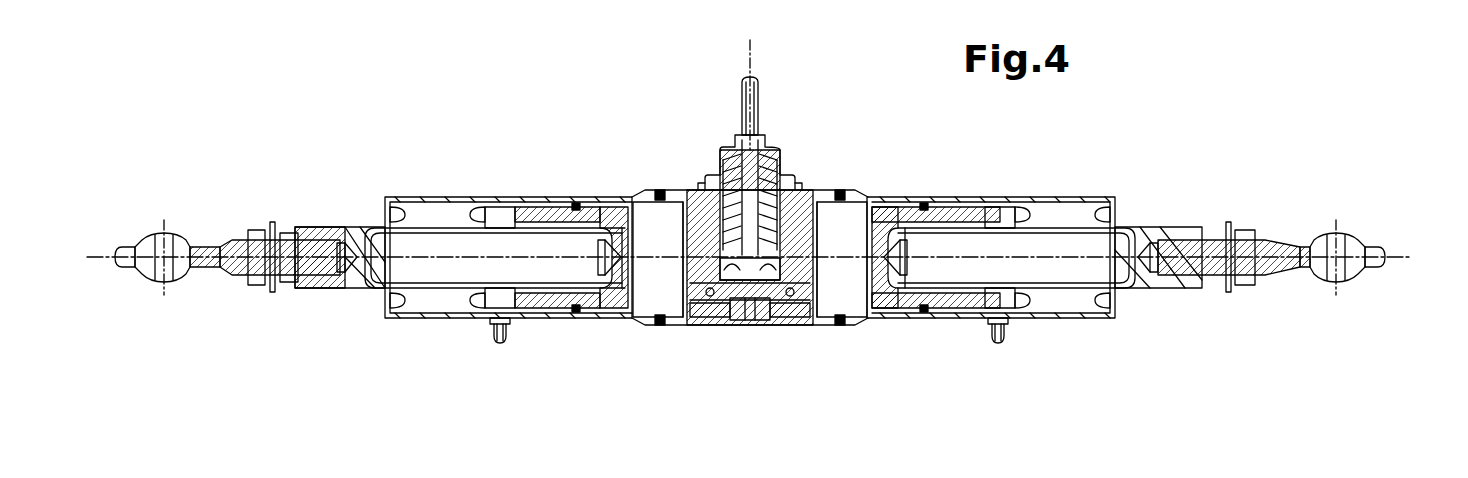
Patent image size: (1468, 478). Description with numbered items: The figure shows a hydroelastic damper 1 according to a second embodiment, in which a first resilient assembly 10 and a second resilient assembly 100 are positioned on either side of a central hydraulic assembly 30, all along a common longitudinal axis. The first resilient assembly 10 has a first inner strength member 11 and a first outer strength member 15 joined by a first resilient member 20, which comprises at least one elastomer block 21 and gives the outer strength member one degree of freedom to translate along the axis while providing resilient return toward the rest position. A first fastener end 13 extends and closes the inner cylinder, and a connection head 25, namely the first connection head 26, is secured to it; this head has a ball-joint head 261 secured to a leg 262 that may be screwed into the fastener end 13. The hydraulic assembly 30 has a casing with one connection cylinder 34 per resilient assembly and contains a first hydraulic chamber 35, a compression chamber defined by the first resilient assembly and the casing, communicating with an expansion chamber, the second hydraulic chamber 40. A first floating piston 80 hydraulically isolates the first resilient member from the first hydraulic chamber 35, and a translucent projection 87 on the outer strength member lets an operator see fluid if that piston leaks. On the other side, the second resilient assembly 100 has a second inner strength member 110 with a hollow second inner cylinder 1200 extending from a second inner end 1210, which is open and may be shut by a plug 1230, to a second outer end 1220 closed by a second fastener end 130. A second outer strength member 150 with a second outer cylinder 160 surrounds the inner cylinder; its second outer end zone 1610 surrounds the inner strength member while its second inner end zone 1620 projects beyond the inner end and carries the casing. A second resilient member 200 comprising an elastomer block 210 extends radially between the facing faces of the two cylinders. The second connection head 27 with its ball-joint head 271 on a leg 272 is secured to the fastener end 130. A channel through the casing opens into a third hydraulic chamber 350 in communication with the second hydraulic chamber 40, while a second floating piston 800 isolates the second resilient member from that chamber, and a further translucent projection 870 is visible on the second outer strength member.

The hydroelastic damper 1 is at (450, 82).
The first resilient assembly 10 is at (466, 330).
The first inner strength member 11 is at (350, 300).
The first fastener end 13 is at (322, 222).
The first outer strength member 15 is at (497, 192).
The first resilient member 20 is at (483, 208).
The first block 21 is at (417, 214).
The connection head 25 is at (137, 339).
The first connection head 26 is at (134, 290).
The second connection head 27 is at (1302, 292).
The hydraulic assembly 30 is at (796, 154).
The connection cylinder 34 is at (700, 180).
The first hydraulic chamber 35 is at (645, 236).
The second hydraulic chamber 40 is at (768, 312).
The first floating piston 80 is at (590, 212).
The translucent projection 87 is at (512, 340).
The second resilient assembly 100 is at (1028, 328).
The second inner strength member 110 is at (1177, 214).
The second fastener end 130 is at (1188, 290).
The second outer strength member 150 is at (1090, 184).
The second outer cylinder 160 is at (1012, 196).
The second resilient member 200 is at (1055, 313).
The block 210 is at (1090, 300).
The ball-joint head 261 is at (148, 220).
The leg 262 is at (217, 250).
The ball-joint head 271 is at (1378, 234).
The leg 272 is at (1277, 250).
The third hydraulic chamber 350 is at (822, 249).
The second floating piston 800 is at (938, 196).
The translucent projection 870 is at (998, 335).
The second inner cylinder 1200 is at (1055, 311).
The second inner end 1210 is at (902, 232).
The second outer end 1220 is at (1145, 242).
The plug 1230 is at (886, 272).
The second outer end zone 1610 is at (1110, 196).
The second inner end zone 1620 is at (870, 188).